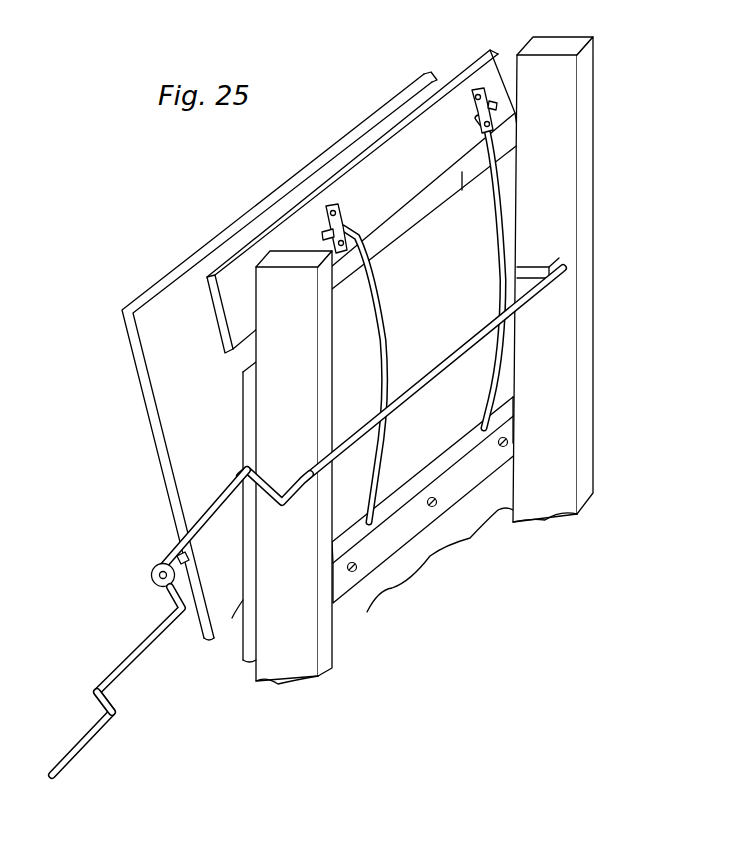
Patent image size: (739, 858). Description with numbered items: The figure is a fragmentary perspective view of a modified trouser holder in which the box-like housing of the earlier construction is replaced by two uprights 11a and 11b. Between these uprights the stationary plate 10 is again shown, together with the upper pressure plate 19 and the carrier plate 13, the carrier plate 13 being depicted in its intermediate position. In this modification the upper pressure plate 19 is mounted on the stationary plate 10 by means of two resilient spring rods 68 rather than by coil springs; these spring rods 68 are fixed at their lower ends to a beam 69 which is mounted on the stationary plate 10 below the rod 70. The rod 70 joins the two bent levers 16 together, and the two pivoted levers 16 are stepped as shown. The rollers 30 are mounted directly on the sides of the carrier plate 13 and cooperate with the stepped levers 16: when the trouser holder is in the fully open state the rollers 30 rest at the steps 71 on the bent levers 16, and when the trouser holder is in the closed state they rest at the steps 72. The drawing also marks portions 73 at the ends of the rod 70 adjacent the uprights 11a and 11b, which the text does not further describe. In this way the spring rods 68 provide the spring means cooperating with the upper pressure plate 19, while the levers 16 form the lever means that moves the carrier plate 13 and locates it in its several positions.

The stationary plate 10 is at (453, 327).
The upright 11a is at (293, 661).
The upright 11b is at (568, 467).
The carrier plate 13 is at (170, 417).
The bent lever 16 is at (146, 648).
The upper pressure plate 19 is at (375, 182).
The roller 30 is at (147, 580).
The resilient spring rod 68 is at (487, 257).
The beam 69 is at (400, 523).
The rod 70 is at (417, 383).
The step 71 is at (112, 690).
The step 72 is at (238, 493).
The hook 73 is at (281, 482).